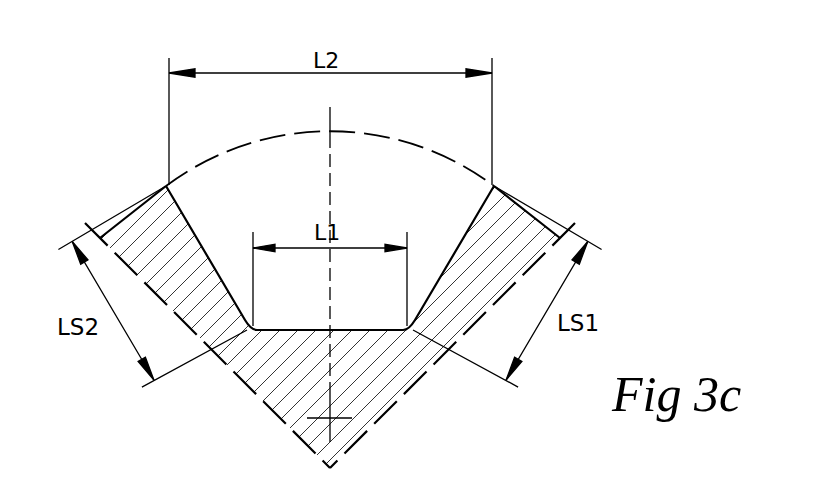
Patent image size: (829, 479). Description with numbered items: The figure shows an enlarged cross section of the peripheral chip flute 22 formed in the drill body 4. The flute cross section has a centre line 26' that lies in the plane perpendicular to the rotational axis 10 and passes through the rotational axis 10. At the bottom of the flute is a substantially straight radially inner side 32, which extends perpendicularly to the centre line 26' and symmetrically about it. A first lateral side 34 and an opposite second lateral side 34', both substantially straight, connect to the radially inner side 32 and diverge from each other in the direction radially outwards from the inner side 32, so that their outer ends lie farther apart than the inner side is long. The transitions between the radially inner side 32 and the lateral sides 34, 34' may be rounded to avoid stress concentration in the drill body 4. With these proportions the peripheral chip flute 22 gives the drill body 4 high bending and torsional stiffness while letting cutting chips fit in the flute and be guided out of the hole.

The peripheral chip flute 22 is at (298, 167).
The centre line 26' is at (361, 241).
The second lateral side 34' is at (216, 253).
The first lateral side 34 is at (448, 246).
The radially inner side 32 is at (340, 328).
The rotational axis 10 is at (328, 412).
The drill body 4 is at (393, 387).